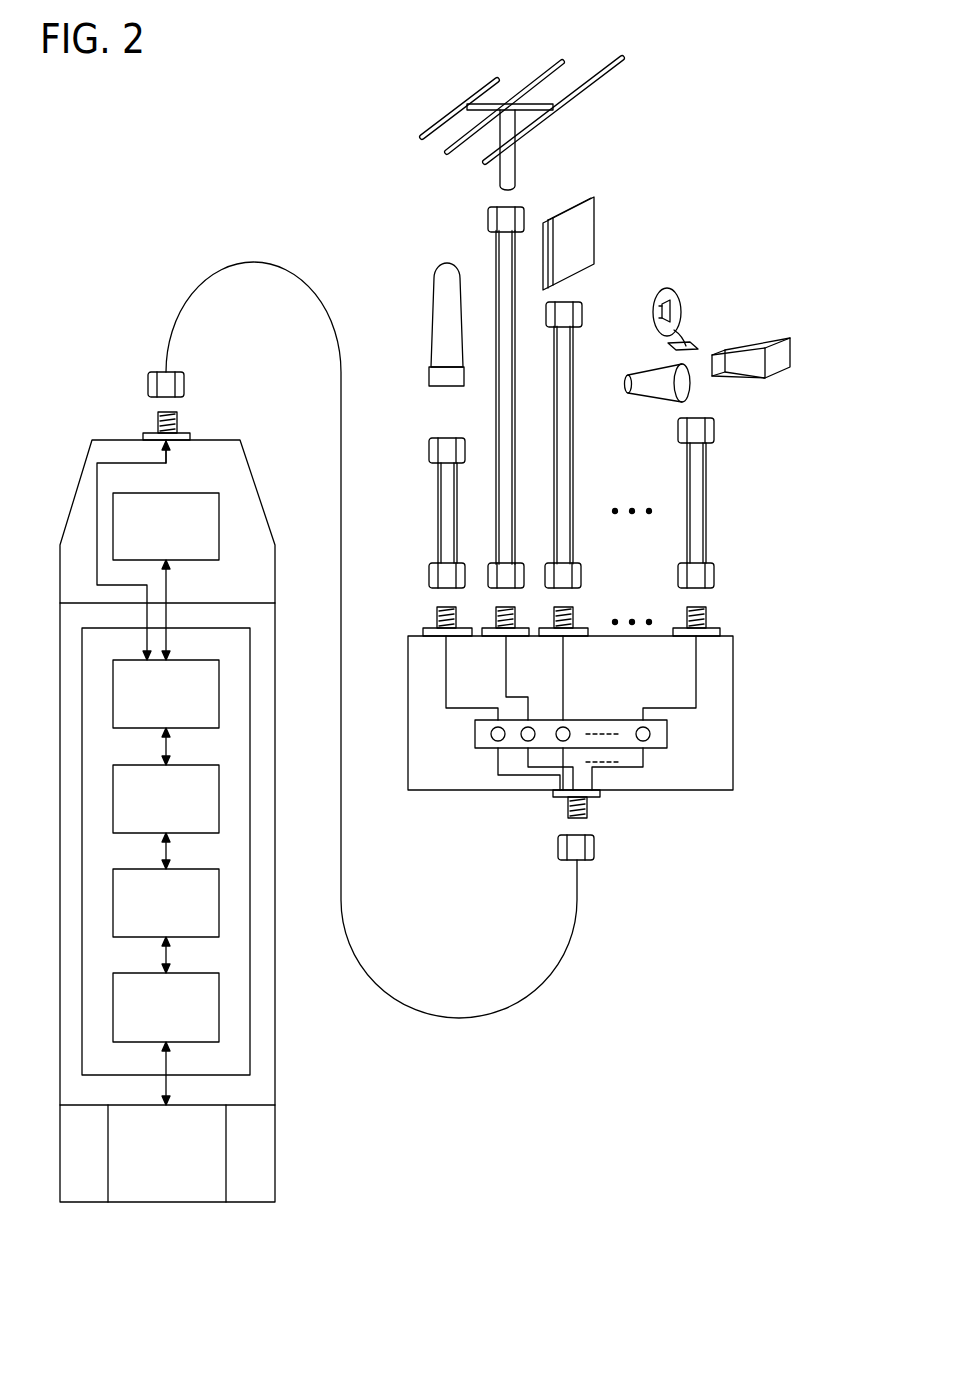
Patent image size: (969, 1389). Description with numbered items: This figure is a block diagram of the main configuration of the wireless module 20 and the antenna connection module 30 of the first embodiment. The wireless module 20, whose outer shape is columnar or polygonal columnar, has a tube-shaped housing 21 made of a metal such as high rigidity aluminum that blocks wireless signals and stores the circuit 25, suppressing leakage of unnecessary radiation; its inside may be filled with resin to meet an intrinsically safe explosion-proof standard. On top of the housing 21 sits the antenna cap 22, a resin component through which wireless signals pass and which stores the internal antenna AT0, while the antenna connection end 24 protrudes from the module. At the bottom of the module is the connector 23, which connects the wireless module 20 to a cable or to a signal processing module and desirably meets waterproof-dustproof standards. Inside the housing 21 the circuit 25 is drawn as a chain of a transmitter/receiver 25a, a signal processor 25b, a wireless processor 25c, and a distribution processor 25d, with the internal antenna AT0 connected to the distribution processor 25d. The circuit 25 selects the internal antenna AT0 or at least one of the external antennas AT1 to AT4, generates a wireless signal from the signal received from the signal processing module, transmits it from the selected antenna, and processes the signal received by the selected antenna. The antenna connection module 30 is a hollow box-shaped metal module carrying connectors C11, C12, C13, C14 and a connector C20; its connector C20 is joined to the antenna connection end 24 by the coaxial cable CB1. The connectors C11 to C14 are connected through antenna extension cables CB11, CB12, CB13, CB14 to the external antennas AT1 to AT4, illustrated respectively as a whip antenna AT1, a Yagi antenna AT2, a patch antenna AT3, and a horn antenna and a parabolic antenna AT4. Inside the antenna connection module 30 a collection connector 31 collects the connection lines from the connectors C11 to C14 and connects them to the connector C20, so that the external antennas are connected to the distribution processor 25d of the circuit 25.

The wireless module 20 is at (54, 460).
The housing 21 is at (276, 850).
The antenna cap 22 is at (246, 488).
The connector 23 is at (262, 1155).
The antenna connection end 24 is at (177, 419).
The circuit 25 is at (241, 952).
The transmitter/receiver 25a is at (113, 1007).
The signal processor 25b is at (113, 904).
The wireless processor 25c is at (113, 799).
The distribution processor 25d is at (113, 695).
The internal antenna AT0 is at (200, 479).
The external antenna AT1 is at (431, 300).
The external antenna AT2 is at (545, 76).
The external antenna AT3 is at (597, 234).
The external antenna AT4 is at (722, 296).
The coaxial cable CB1 is at (523, 996).
The antenna extension cable CB11 is at (438, 510).
The antenna extension cable CB12 is at (496, 413).
The antenna extension cable CB13 is at (573, 464).
The antenna extension cable CB14 is at (706, 482).
The connector C11 is at (437, 617).
The connector C12 is at (497, 617).
The connector C13 is at (554, 617).
The connector C14 is at (687, 617).
The connector C20 is at (588, 808).
The antenna connection module 30 is at (750, 652).
The collection connector 31 is at (668, 735).